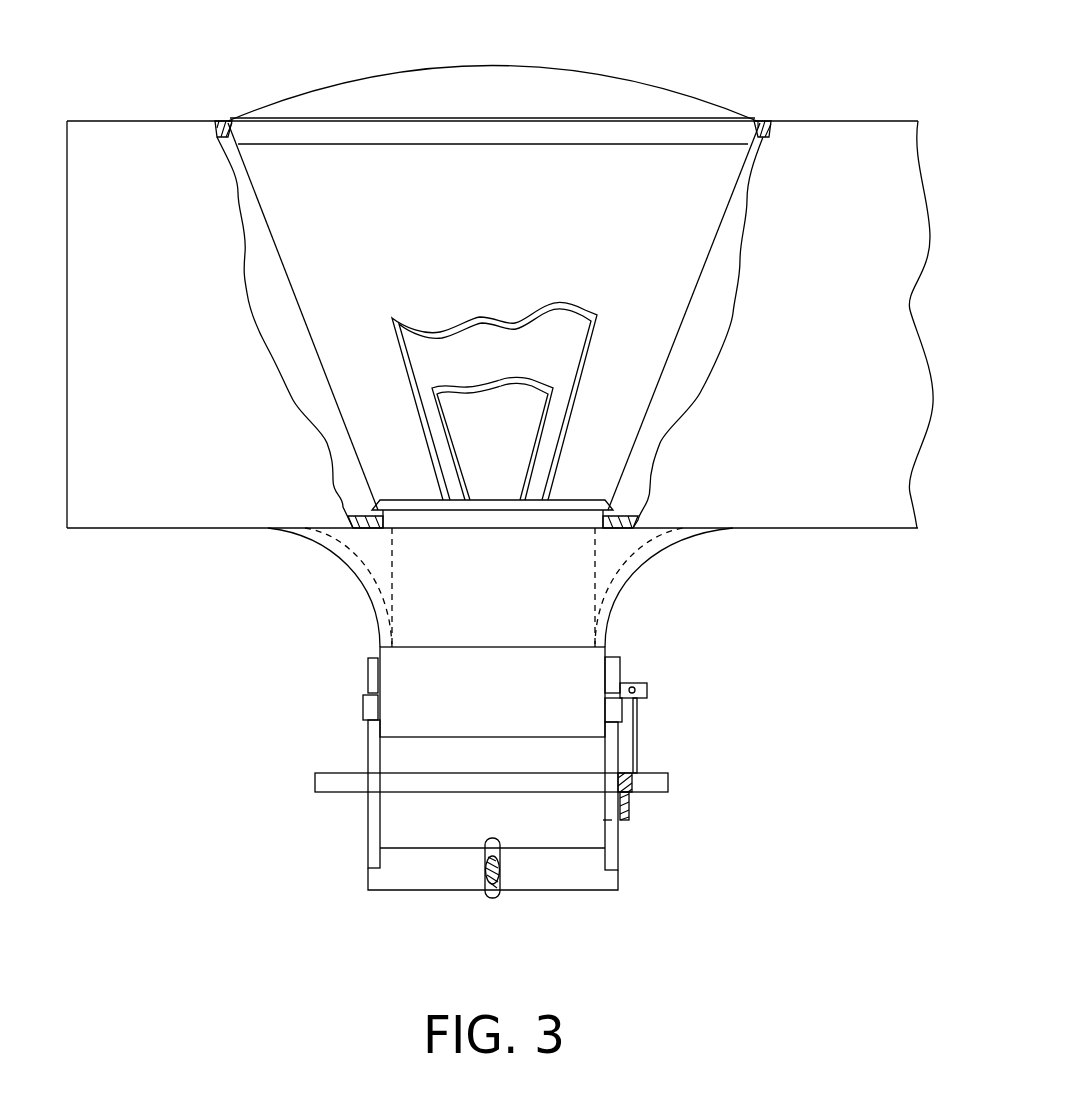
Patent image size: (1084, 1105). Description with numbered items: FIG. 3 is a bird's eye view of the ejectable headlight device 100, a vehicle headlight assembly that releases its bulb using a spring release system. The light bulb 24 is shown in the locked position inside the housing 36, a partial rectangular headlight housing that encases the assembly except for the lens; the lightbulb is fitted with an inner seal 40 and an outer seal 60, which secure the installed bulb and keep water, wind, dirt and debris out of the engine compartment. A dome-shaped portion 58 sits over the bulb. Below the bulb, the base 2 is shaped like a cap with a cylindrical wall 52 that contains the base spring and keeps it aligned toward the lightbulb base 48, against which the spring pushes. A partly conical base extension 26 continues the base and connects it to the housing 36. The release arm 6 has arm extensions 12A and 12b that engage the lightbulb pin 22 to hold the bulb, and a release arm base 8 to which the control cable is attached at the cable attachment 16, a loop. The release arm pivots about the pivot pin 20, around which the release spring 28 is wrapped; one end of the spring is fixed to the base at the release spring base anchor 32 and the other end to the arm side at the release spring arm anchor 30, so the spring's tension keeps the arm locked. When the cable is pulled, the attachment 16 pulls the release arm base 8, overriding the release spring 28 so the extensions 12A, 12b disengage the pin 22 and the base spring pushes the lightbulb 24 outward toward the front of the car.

The vehicle headlight assembly 100 is at (848, 773).
The base 2 is at (352, 647).
The release arm 6 is at (305, 712).
The release arm base 8 is at (528, 882).
The release arm extension 12A is at (622, 667).
The release arm extension 12b is at (377, 657).
The cable attachment 16 is at (493, 900).
The pivot pin 20 is at (670, 785).
The lightbulb pin 22 is at (613, 710).
The light bulb 24 is at (652, 173).
The base extension 26 is at (625, 587).
The release spring 28 is at (640, 738).
The release spring arm anchor 30 is at (623, 813).
The release spring base anchor 32 is at (632, 686).
The housing 36 is at (827, 518).
The inner seal 40 is at (347, 525).
The lightbulb base 48 is at (567, 561).
The cylindrical wall 52 is at (415, 667).
The dome lens 58 is at (497, 77).
The outer seal 60 is at (227, 123).